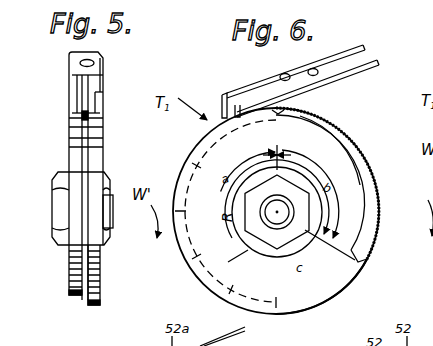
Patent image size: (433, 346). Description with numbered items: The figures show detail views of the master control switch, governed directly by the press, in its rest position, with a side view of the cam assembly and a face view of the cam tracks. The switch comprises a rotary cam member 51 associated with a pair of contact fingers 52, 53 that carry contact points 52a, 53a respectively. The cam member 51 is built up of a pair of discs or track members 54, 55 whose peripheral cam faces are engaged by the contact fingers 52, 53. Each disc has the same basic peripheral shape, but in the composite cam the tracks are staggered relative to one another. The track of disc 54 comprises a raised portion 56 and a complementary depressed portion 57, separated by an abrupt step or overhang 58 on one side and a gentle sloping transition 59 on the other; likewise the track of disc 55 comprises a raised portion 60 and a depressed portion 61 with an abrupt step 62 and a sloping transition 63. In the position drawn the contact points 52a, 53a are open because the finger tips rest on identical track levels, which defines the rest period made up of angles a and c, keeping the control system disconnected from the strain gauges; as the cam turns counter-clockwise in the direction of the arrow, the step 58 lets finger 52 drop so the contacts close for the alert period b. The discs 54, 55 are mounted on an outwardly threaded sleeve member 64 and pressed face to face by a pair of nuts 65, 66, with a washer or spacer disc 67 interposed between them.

In FIG. 6, the rotary cam member 51 is at (181, 254).
In FIG. 6, the contact finger 52 is at (331, 54).
In FIG. 6, the contact point 52a is at (286, 80).
In FIG. 6, the contact finger 53 is at (346, 68).
In FIG. 6, the contact point 53a is at (318, 78).
In FIG. 5, the disc 54 is at (105, 144).
In FIG. 5, the disc 55 is at (68, 147).
In FIG. 6, the raised portion 56 is at (184, 168).
In FIG. 6, the depressed portion 57 is at (356, 170).
In FIG. 6, the step 58 is at (281, 113).
In FIG. 6, the sloping transition 59 is at (298, 305).
In FIG. 6, the raised portion 60 is at (380, 198).
In FIG. 6, the depressed portion 61 is at (199, 281).
In FIG. 6, the step 62 is at (360, 264).
In FIG. 6, the sloping transition 63 is at (200, 156).
In FIG. 5, the sleeve member 64 is at (111, 222).
In FIG. 5, the nut 65 is at (52, 180).
In FIG. 5, the nut 66 is at (108, 172).
In FIG. 5, the washer 67 is at (84, 299).